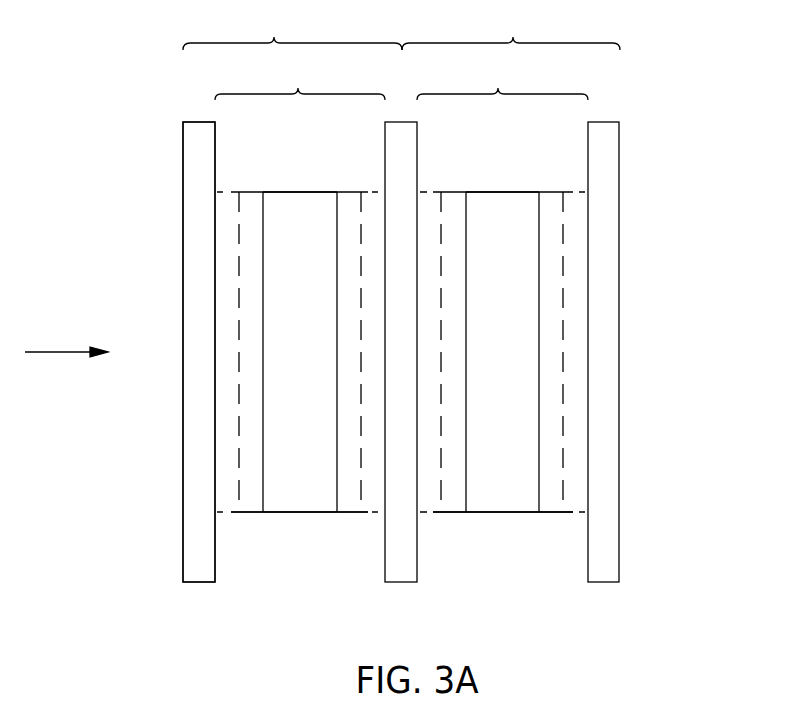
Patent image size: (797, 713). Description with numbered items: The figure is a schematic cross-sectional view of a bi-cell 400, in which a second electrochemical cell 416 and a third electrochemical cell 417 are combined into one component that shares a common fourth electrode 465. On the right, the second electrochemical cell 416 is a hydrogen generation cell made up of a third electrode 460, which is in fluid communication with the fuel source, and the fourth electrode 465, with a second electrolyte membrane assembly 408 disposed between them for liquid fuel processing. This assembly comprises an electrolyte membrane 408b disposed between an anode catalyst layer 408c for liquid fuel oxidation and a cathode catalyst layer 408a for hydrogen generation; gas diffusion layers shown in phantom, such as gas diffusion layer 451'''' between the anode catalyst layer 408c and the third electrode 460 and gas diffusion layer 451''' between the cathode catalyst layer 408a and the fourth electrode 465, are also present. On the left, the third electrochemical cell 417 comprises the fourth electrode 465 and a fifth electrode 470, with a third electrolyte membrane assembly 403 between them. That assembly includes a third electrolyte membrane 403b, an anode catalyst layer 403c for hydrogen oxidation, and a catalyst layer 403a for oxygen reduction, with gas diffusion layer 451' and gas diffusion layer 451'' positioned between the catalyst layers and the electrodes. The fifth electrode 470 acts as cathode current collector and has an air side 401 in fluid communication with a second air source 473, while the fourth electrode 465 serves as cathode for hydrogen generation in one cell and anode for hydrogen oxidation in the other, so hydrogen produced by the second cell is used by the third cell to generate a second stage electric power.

The bi-cell 400 is at (678, 113).
The air side 401 is at (183, 235).
The third electrolyte membrane assembly 403 is at (250, 326).
The catalyst layer 403a is at (250, 192).
The third electrolyte membrane 403b is at (297, 447).
The anode catalyst layer 403c is at (352, 192).
The second electrolyte membrane assembly 408 is at (553, 326).
The cathode catalyst layer 408a is at (452, 192).
The electrolyte membrane 408b is at (507, 447).
The anode catalyst layer 408c is at (552, 192).
The second electrochemical cell 416 is at (511, 30).
The third electrochemical cell 417 is at (292, 30).
The gas diffusion layer 451' is at (253, 554).
The gas diffusion layer 451'' is at (348, 554).
The gas diffusion layer 451''' is at (459, 554).
The gas diffusion layer 451'''' is at (549, 554).
The third electrode 460 is at (605, 582).
The fourth electrode 465 is at (403, 582).
The fifth electrode 470 is at (202, 582).
The second air source 473 is at (45, 352).